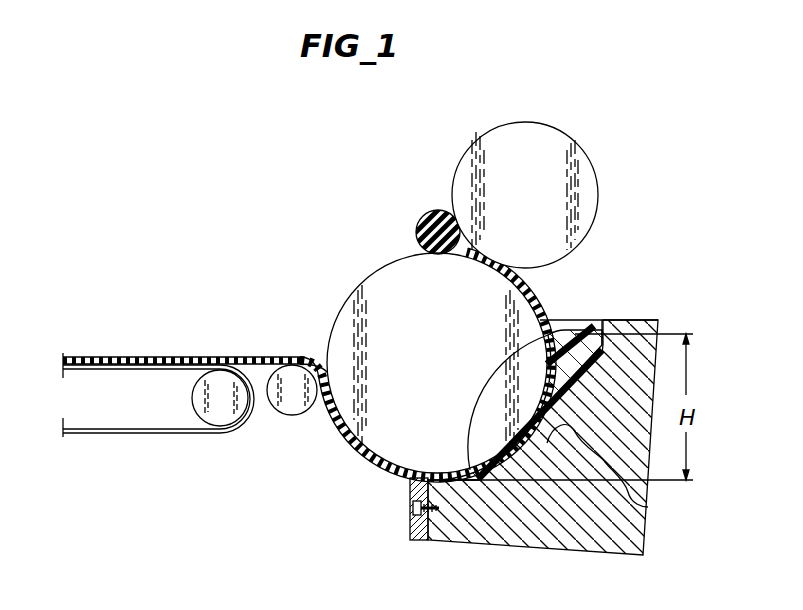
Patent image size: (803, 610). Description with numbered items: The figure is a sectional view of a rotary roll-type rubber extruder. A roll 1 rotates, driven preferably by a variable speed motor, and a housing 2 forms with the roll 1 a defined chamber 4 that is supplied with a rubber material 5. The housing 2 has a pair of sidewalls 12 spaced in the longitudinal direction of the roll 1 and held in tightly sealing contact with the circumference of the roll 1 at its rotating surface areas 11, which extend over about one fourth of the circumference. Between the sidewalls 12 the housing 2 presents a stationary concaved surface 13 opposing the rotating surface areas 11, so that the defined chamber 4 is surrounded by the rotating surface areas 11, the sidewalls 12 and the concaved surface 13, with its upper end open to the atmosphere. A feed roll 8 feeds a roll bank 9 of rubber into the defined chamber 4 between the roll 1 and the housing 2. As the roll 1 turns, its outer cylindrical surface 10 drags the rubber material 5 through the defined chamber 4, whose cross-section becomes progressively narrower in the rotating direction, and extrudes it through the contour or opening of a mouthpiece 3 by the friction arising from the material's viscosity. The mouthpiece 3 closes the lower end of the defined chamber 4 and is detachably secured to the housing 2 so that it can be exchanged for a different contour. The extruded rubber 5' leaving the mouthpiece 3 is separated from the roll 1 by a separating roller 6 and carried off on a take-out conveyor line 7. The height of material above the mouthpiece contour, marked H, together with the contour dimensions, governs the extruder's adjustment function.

The roll 1 is at (384, 288).
The housing 2 is at (643, 327).
The mouthpiece 3 is at (417, 488).
The defined chamber 4 is at (597, 320).
The rubber material 5 is at (544, 377).
The extruded rubber 5' is at (181, 339).
The separating roller 6 is at (295, 407).
The take-out conveyor line 7 is at (227, 432).
The feed roll 8 is at (587, 195).
The roll bank 9 is at (426, 222).
The outer cylindrical surface 10 is at (347, 300).
The rotating surface areas 11 is at (461, 483).
The sidewalls 12 is at (558, 336).
The stationary concaved surface 13 is at (647, 505).